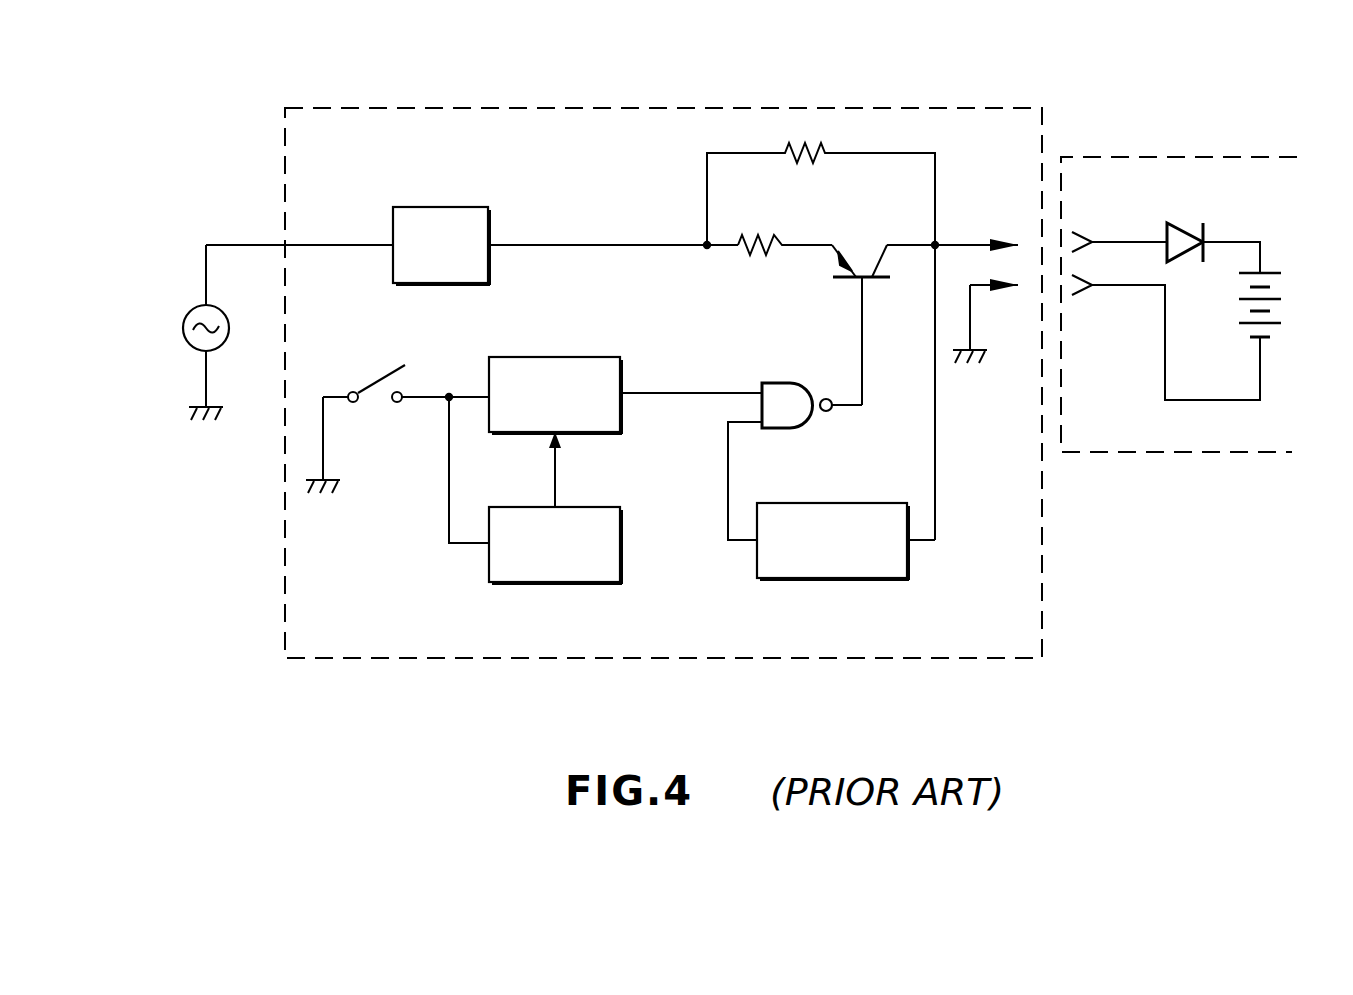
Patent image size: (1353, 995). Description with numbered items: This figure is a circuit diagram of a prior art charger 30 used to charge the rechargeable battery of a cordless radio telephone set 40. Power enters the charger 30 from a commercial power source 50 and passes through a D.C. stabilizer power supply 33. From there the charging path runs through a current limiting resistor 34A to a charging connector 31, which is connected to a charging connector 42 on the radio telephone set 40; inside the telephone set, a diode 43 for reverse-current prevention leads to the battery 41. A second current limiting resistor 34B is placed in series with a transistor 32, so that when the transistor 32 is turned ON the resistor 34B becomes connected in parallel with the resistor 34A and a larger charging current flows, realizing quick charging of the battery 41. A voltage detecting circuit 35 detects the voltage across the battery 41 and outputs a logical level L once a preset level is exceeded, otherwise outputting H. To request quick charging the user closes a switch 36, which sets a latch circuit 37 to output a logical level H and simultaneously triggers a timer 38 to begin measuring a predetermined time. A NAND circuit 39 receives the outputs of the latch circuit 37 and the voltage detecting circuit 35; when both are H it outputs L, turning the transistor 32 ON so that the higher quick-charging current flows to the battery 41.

The charger 30 is at (622, 107).
The charging connector 31 is at (992, 242).
The transistor 32 is at (858, 258).
The D.C. stabilizer power supply 33 is at (440, 207).
The current limiting resistor 34A is at (805, 165).
The current limiting resistor 34B is at (758, 257).
The voltage detecting circuit 35 is at (849, 503).
The switch 36 is at (380, 392).
The latch circuit 37 is at (551, 357).
The timer 38 is at (553, 584).
The NAND circuit 39 is at (795, 383).
The radio telephone set 40 is at (1225, 157).
The battery 41 is at (1274, 312).
The charging connector 42 is at (1082, 240).
The diode 43 is at (1185, 226).
The commercial power source 50 is at (198, 312).